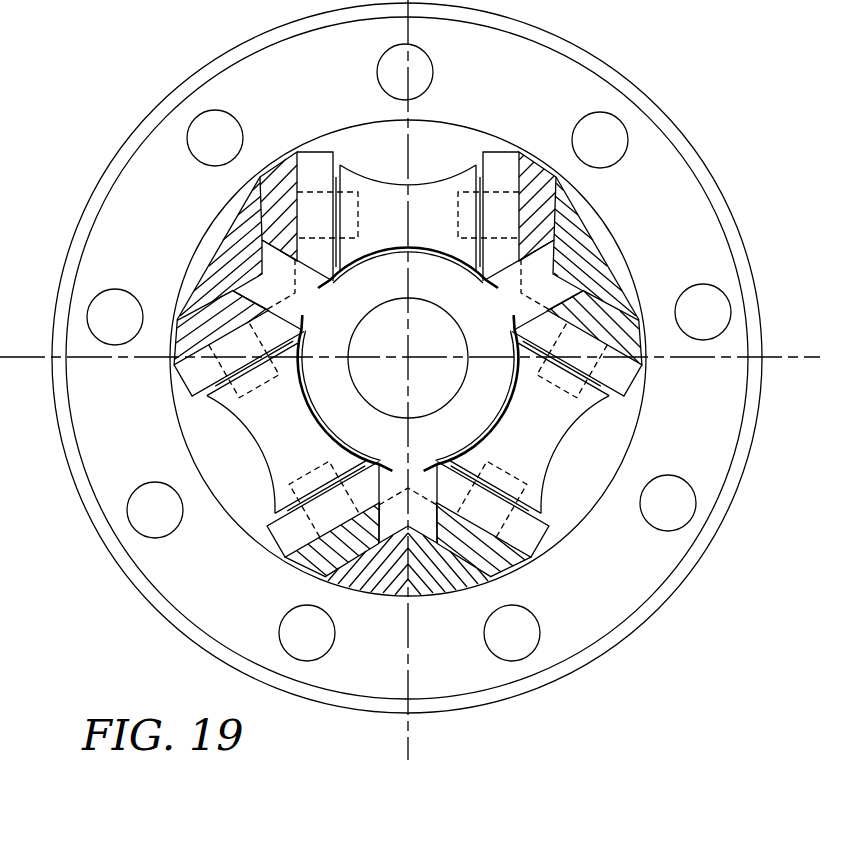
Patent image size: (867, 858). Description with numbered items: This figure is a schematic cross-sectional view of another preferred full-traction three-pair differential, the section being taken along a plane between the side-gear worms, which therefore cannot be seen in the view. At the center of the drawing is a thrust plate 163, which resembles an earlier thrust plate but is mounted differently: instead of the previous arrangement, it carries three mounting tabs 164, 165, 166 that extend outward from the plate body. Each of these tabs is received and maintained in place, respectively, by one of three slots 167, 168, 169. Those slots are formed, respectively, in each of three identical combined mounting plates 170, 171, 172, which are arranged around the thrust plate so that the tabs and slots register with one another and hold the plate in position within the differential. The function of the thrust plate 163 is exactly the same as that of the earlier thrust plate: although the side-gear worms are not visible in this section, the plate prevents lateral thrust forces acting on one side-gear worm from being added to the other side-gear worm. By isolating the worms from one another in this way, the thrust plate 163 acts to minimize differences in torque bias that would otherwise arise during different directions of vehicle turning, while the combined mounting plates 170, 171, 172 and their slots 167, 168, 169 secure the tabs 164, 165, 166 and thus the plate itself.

The thrust plate 163 is at (384, 273).
The mounting tab 164 is at (556, 272).
The mounting tab 165 is at (400, 548).
The mounting tab 166 is at (243, 256).
The slot 167 is at (548, 262).
The slot 168 is at (420, 553).
The slot 169 is at (263, 262).
The combined mounting plate 170 is at (548, 152).
The combined mounting plate 171 is at (545, 566).
The combined mounting plate 172 is at (170, 346).